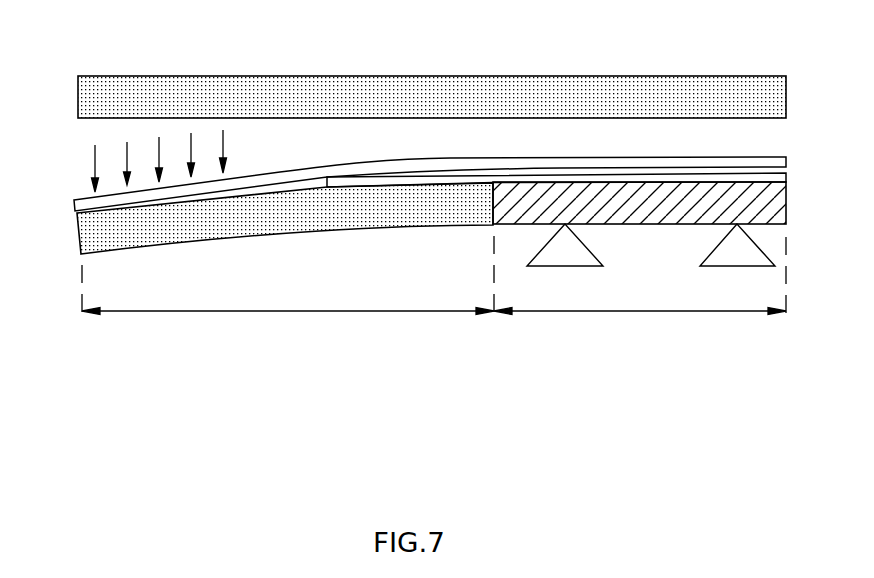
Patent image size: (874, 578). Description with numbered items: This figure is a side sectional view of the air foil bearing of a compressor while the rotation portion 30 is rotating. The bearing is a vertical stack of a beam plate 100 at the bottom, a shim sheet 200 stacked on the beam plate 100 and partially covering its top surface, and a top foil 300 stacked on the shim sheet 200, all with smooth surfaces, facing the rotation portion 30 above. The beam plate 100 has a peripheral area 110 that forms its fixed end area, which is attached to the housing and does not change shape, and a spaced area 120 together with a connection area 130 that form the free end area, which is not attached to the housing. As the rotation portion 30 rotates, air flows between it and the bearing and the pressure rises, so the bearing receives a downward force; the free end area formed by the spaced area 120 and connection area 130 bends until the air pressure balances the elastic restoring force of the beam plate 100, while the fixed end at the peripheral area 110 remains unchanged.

The rotation portion 30 is at (358, 78).
The top foil 300 is at (632, 160).
The shim sheet 200 is at (787, 178).
The beam plate 100 is at (76, 226).
The peripheral area 110 is at (648, 312).
The spaced area 120 is at (288, 319).
The connection area 130 is at (288, 312).